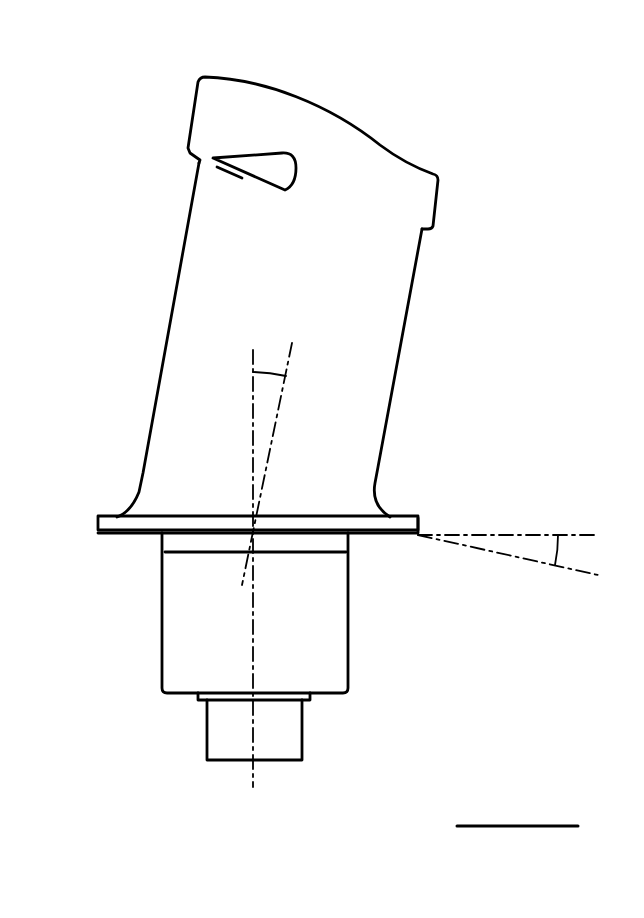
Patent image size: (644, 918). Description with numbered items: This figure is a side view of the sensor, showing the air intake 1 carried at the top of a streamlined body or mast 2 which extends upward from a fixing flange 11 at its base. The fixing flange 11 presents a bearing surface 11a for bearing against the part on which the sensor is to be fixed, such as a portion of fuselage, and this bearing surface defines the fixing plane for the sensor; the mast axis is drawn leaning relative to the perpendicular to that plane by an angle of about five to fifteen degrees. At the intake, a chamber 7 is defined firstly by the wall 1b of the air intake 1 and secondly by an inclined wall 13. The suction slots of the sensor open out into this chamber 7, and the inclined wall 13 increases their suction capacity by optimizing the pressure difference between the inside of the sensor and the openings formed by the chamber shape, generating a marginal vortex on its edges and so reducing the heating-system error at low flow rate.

The air intake 1 is at (160, 123).
The wall 1b is at (252, 156).
The streamlined body or mast 2 is at (197, 405).
The chamber 7 is at (293, 170).
The fixing flange 11 is at (116, 524).
The bearing surface 11a is at (406, 546).
The inclined wall 13 is at (251, 200).